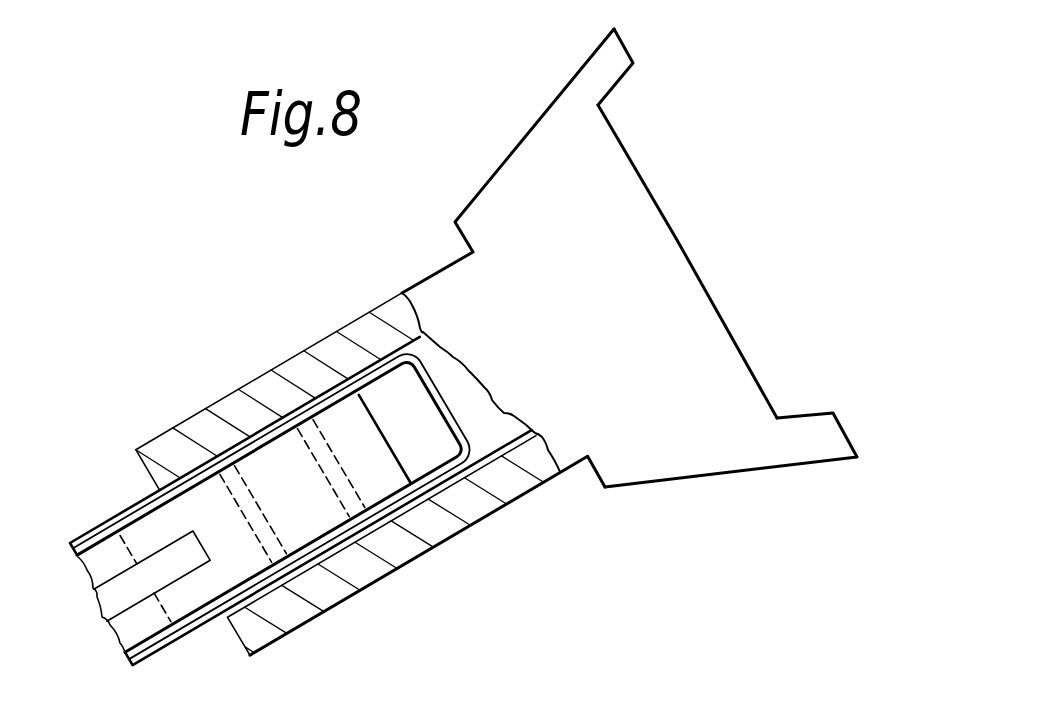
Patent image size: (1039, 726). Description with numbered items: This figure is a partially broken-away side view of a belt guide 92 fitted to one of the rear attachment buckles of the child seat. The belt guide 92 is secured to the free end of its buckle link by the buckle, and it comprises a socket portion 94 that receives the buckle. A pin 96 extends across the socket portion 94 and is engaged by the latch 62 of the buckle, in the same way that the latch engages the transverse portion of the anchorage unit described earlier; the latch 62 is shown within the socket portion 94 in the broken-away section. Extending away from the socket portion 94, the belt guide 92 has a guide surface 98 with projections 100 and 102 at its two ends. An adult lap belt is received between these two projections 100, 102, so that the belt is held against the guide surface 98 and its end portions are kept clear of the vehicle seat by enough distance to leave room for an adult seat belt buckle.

The latch 62 is at (308, 523).
The belt guide 92 is at (507, 158).
The socket portion 94 is at (305, 360).
The pin 96 is at (245, 438).
The guide surface 98 is at (692, 268).
The projection 100 is at (613, 47).
The projection 102 is at (833, 435).